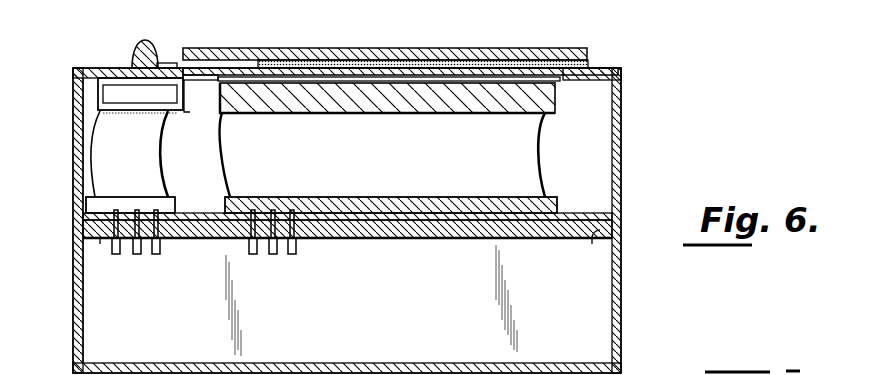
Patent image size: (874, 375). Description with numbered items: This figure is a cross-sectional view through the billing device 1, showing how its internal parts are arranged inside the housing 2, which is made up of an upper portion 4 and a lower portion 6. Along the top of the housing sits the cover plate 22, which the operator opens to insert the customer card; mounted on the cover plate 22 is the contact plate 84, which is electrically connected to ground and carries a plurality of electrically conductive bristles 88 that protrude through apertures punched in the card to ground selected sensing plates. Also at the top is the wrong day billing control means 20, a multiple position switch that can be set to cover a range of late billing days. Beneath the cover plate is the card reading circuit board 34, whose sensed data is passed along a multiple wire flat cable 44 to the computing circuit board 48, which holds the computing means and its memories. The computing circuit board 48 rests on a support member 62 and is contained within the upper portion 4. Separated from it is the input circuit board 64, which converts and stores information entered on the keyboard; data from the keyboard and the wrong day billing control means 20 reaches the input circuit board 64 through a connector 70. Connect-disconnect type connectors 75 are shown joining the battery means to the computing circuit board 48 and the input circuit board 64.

The billing device 1 is at (628, 100).
The housing 2 is at (622, 173).
The upper portion 4 is at (73, 137).
The lower portion 6 is at (80, 278).
The wrong day billing control means 20 is at (142, 45).
The cover plate 22 is at (296, 48).
The card reading circuit board 34 is at (388, 74).
The multiple wire flat cable 44 is at (150, 130).
The computing circuit board 48 is at (396, 220).
The support member 62 is at (102, 240).
The input circuit board 64 is at (172, 238).
The connector 70 is at (118, 93).
The connect-disconnect type connectors 75 is at (155, 255).
The contact plate 84 is at (522, 68).
The electrically conductive bristles 88 is at (458, 63).